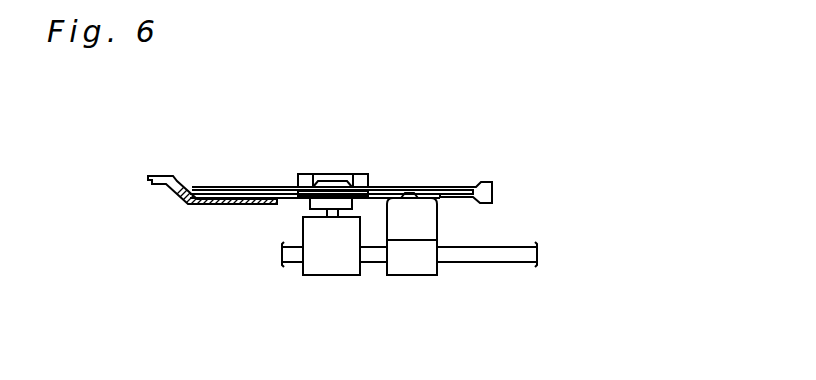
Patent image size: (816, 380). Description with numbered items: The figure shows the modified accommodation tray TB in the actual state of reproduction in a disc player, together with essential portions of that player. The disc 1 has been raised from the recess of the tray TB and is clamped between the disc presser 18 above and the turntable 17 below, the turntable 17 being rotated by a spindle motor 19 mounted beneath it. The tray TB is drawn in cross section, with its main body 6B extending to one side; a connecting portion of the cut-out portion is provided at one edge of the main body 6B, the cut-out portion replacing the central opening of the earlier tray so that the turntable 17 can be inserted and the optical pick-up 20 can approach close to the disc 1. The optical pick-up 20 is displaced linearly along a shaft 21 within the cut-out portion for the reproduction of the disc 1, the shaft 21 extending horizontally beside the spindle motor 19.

The accommodation tray TB is at (508, 175).
The disc 1 is at (457, 186).
The disc presser 18 is at (364, 174).
The turntable 17 is at (318, 198).
The main body 6B is at (178, 203).
The spindle motor 19 is at (331, 266).
The optical pick-up 20 is at (419, 263).
The shaft 21 is at (509, 258).